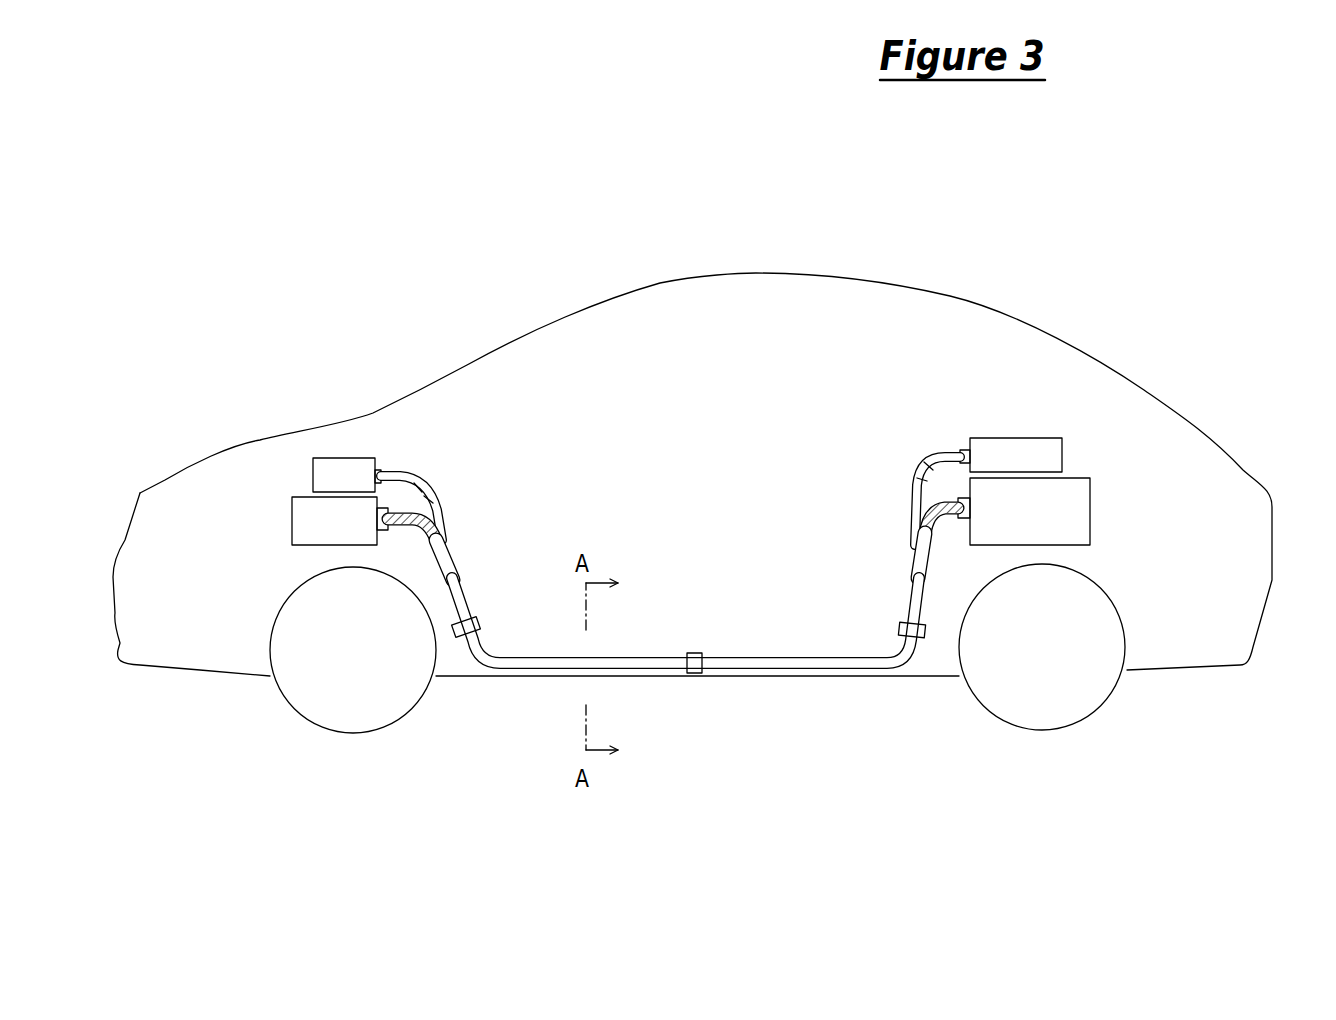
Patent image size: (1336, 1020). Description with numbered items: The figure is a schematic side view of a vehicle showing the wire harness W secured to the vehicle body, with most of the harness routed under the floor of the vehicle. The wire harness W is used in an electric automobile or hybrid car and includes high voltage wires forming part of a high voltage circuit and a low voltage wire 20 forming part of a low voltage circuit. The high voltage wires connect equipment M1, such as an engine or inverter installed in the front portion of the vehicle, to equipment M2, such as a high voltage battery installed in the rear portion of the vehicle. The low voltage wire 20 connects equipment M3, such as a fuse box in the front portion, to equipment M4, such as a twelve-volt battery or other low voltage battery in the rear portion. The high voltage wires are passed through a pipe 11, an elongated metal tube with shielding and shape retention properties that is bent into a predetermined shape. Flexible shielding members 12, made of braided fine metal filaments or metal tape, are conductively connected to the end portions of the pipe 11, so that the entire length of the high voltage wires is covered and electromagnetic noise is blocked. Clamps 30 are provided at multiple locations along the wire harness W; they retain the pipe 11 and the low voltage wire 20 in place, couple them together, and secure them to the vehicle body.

The wire harness W is at (754, 625).
The equipment M1 is at (307, 525).
The equipment M2 is at (1073, 515).
The equipment M3 is at (345, 470).
The equipment M4 is at (1035, 452).
The pipe 11 is at (777, 663).
The shielding member 12 is at (413, 527).
The low voltage wire 20 is at (905, 505).
The clamp 30 is at (692, 673).